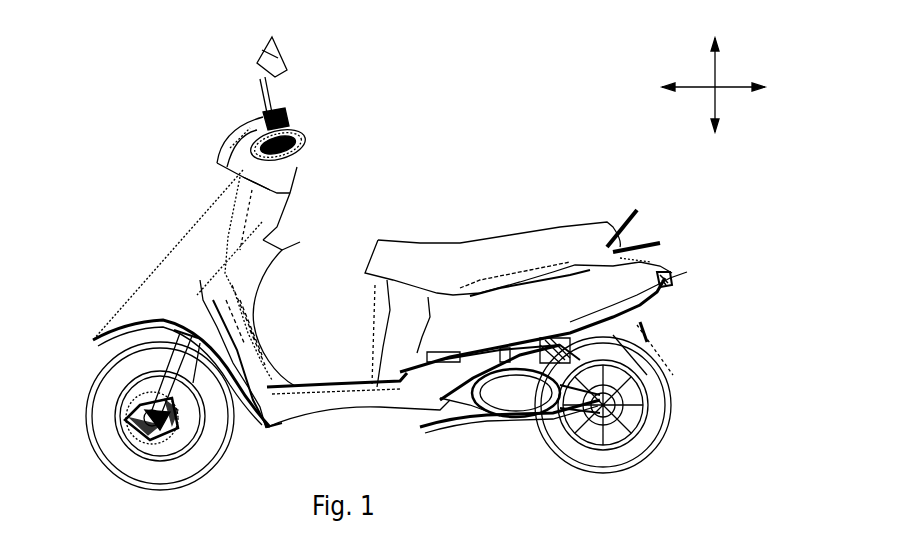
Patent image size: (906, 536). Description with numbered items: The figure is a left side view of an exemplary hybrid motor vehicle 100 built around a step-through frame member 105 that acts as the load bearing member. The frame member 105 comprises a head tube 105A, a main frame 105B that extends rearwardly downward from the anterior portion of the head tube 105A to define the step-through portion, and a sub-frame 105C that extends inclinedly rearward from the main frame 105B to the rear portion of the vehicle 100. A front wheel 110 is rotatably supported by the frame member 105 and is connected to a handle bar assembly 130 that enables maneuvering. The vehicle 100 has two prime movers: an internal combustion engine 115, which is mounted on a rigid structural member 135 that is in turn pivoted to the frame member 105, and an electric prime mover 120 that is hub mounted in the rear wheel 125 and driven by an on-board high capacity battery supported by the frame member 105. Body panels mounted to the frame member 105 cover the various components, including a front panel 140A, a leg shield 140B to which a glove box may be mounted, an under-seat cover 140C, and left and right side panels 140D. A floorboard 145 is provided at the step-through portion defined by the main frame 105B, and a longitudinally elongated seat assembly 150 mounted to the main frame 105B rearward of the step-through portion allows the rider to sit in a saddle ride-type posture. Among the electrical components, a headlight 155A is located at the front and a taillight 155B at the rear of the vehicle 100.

The motor vehicle 100 is at (88, 150).
The frame member 105 is at (207, 281).
The head tube 105A is at (206, 277).
The main frame 105B is at (262, 410).
The sub-frame 105C is at (497, 215).
The front wheel 110 is at (108, 428).
The internal combustion engine 115 is at (534, 395).
The electric prime mover 120 is at (615, 418).
The rear wheel 125 is at (633, 447).
The handle bar assembly 130 is at (283, 135).
The structural member 135 is at (468, 420).
The front panel 140A is at (217, 233).
The leg shield 140B is at (283, 250).
The under-seat cover 140C is at (387, 347).
The side panel 140D is at (572, 290).
The floorboard 145 is at (340, 385).
The seat assembly 150 is at (460, 260).
The headlight 155A is at (232, 148).
The taillight 155B is at (678, 283).